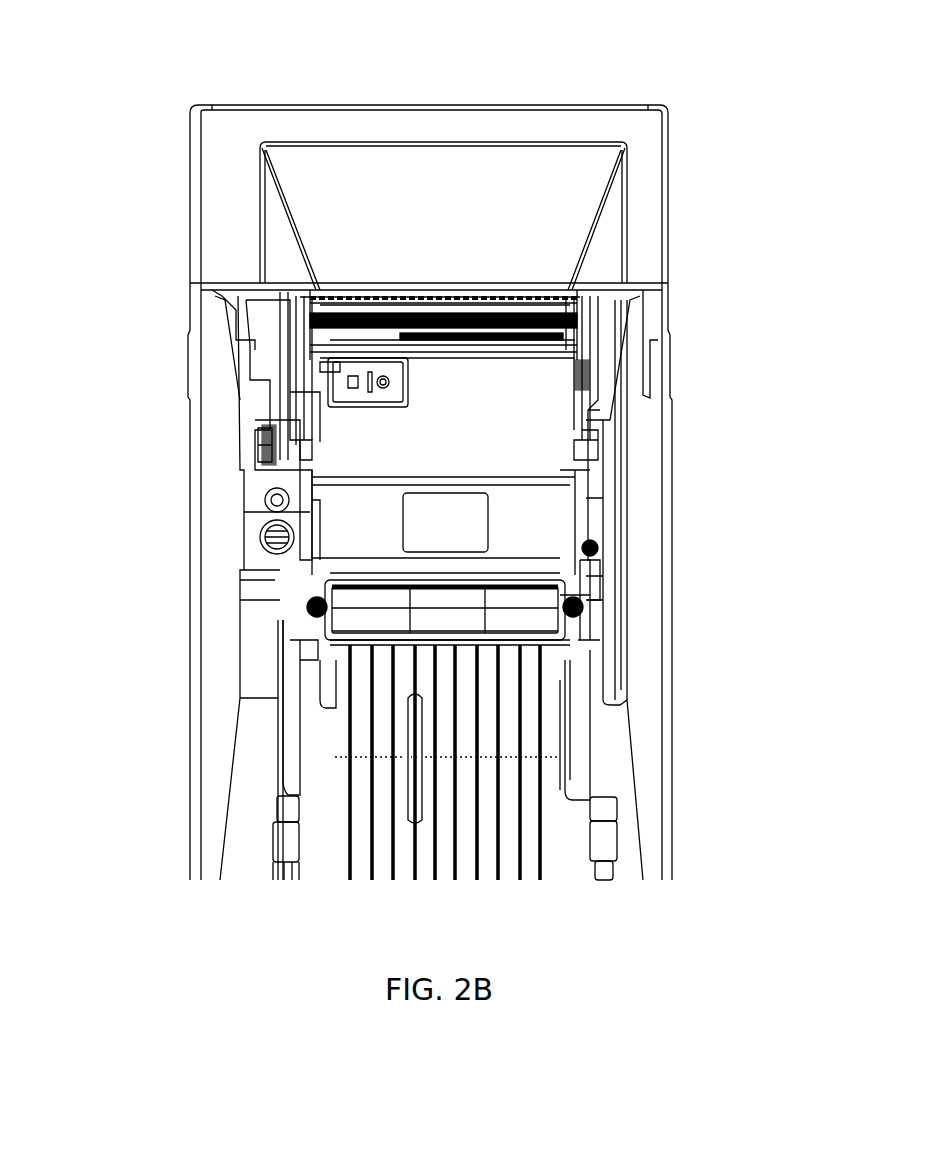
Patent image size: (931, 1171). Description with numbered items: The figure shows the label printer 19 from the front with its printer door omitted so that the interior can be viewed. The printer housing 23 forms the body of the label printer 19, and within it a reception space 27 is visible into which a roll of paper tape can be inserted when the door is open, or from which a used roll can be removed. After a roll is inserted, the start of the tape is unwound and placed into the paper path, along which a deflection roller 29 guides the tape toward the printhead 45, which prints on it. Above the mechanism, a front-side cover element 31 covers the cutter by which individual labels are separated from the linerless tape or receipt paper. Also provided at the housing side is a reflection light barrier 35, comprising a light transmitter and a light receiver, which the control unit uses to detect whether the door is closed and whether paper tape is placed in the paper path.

The label printer 19 is at (150, 428).
The printer housing 23 is at (192, 623).
The reception space 27 is at (495, 757).
The deflection roller 29 is at (528, 607).
The front-side cover element 31 is at (447, 190).
The reflection light barrier 35 is at (425, 407).
The printhead 45 is at (537, 305).